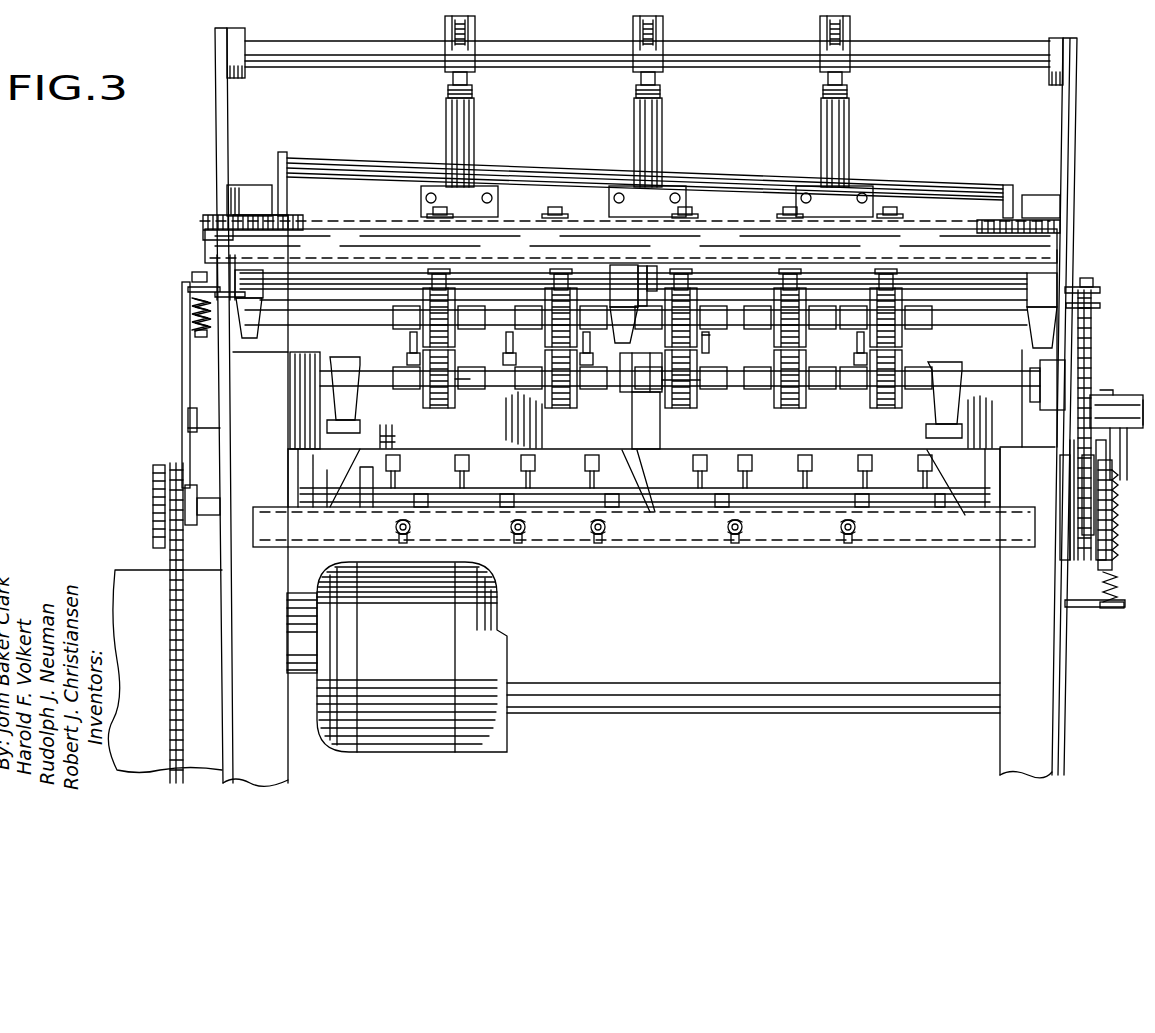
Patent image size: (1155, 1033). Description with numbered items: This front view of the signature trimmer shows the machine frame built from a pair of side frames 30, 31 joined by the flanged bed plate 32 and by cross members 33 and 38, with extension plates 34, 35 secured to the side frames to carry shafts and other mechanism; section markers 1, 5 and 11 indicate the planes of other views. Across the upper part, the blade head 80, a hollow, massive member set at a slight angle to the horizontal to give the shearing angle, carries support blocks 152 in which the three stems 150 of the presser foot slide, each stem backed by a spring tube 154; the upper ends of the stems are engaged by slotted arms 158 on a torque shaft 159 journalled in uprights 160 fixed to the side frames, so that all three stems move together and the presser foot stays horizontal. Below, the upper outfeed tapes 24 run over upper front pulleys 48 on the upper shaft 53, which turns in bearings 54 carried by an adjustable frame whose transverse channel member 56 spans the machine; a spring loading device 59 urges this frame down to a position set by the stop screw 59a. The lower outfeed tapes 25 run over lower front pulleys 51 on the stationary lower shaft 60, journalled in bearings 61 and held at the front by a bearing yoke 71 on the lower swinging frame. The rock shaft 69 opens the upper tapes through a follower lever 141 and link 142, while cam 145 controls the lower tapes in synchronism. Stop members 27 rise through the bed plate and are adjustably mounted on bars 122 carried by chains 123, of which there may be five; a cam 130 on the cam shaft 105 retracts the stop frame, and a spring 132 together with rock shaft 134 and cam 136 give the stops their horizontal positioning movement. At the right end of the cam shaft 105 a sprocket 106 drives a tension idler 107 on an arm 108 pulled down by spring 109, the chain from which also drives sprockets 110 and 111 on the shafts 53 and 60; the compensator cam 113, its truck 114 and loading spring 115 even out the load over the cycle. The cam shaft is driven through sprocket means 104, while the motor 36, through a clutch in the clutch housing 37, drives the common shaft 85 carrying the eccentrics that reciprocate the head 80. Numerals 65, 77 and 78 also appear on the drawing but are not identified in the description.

The section line 1- 1 is at (797, 26).
The section line 5- 5 is at (862, 246).
The section line 11-11 / table beam 11 is at (445, 246).
The upper outfeed tape 24 is at (575, 290).
The lower outfeed tape 25 is at (432, 410).
The stop member 27 is at (410, 344).
The side frame 30 is at (243, 185).
The side frame 31 is at (1032, 195).
The flanged bed plate 32 is at (695, 444).
The cross member 33 is at (820, 547).
The extension plate 34 is at (225, 400).
The extension plate 35 is at (1072, 478).
The motor 36 is at (500, 612).
The clutch housing 37 is at (140, 575).
The cross member 38 is at (312, 222).
The upper front pulley 48 is at (665, 288).
The lower front pulley 51 is at (460, 405).
The upper shaft 53 is at (360, 320).
The bearing 54 is at (622, 298).
The transverse channel member 56 is at (735, 262).
The spring loading device 59 is at (192, 334).
The stop screw 59a is at (192, 276).
The lower shaft 60 is at (460, 392).
The bearing 61 is at (355, 410).
The stop pin 65 is at (713, 340).
The rock shaft 69 is at (508, 285).
The bearing yoke 71 is at (705, 396).
The bolt 77 is at (553, 207).
The bolt foot 78 is at (575, 215).
The blade head 80 is at (548, 170).
The common shaft 85 is at (814, 684).
The sprocket means 104 is at (163, 592).
The cam shaft 105 is at (718, 505).
The sprocket 106 is at (1090, 565).
The tension idler 107 is at (1062, 535).
The arm 108 is at (1095, 545).
The spring 109 is at (1122, 606).
The sprocket 110 is at (1091, 358).
The sprocket 111 is at (1091, 380).
The compensator cam 113 is at (1118, 576).
The truck 114 is at (1128, 392).
The loading spring 115 is at (1105, 604).
The bar 122 is at (407, 363).
The chain 123 is at (520, 468).
The cam 130 is at (445, 505).
The spring 132 is at (405, 488).
The rock shaft 134 is at (695, 492).
The cam 136 is at (940, 505).
The follower lever 141 is at (183, 439).
The link 142 is at (182, 378).
The cam 145 is at (337, 488).
The stem 150 is at (452, 77).
The support block 152 is at (421, 192).
The spring tube 154 is at (446, 122).
The slotted arm 158 is at (445, 21).
The torque shaft 159 is at (535, 45).
The upright 160 is at (215, 130).